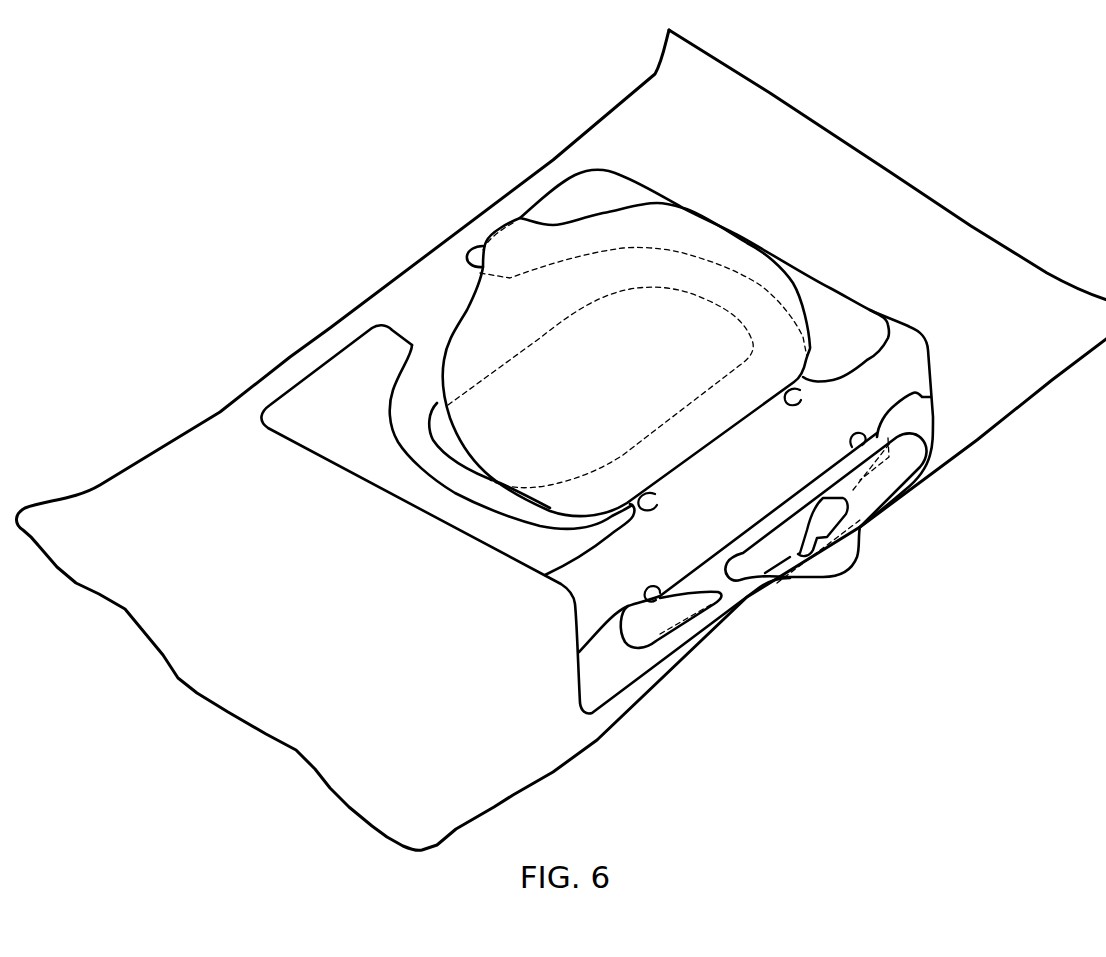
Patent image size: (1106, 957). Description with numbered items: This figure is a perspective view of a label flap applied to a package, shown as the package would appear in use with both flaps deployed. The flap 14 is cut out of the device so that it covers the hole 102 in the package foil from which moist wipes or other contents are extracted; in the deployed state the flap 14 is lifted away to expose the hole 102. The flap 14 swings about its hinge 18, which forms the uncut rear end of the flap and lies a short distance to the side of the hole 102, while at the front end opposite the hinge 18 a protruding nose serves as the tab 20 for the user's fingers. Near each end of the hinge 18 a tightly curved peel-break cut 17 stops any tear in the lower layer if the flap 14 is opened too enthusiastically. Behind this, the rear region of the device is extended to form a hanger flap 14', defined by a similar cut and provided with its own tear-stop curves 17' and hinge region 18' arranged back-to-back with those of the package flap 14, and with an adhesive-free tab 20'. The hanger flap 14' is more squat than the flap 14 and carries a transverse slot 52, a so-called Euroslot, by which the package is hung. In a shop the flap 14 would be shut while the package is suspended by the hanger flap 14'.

The flap portion 14 is at (637, 353).
The hanger flap 14' is at (696, 645).
The peel break cut 17 is at (935, 382).
The tear-stop curve 17' is at (931, 455).
The hinge 18 is at (719, 427).
The hinge region 18' is at (802, 517).
The tab 20 is at (695, 341).
The adhesive-free tab 20' is at (825, 538).
The transverse slot 52 is at (777, 583).
The hole 102 is at (447, 433).